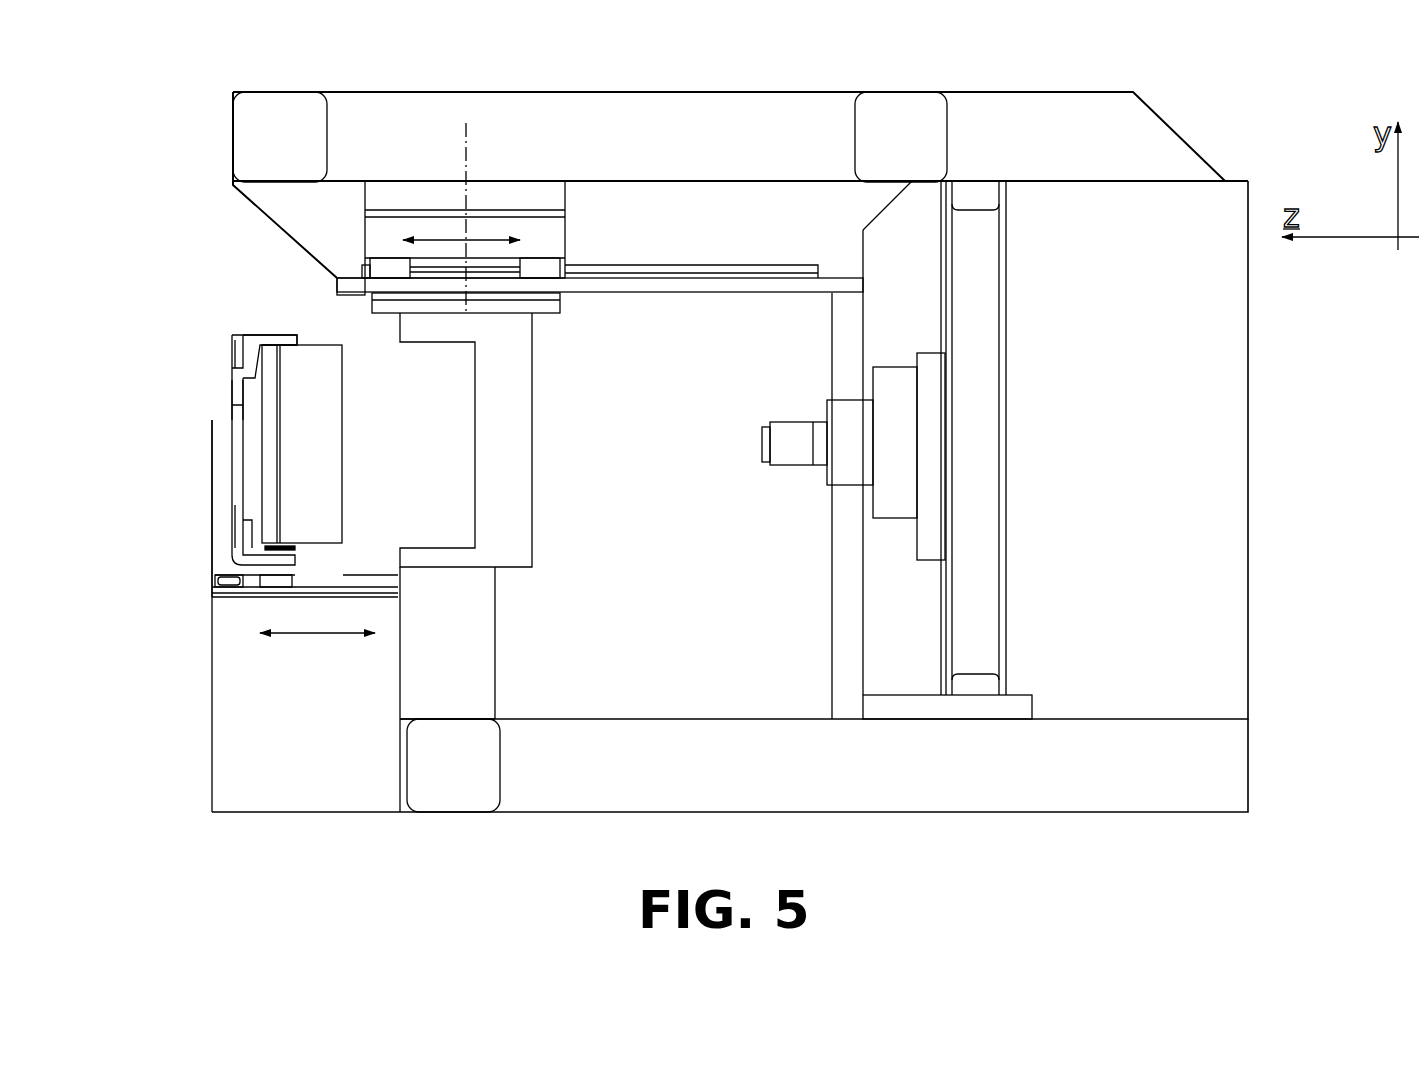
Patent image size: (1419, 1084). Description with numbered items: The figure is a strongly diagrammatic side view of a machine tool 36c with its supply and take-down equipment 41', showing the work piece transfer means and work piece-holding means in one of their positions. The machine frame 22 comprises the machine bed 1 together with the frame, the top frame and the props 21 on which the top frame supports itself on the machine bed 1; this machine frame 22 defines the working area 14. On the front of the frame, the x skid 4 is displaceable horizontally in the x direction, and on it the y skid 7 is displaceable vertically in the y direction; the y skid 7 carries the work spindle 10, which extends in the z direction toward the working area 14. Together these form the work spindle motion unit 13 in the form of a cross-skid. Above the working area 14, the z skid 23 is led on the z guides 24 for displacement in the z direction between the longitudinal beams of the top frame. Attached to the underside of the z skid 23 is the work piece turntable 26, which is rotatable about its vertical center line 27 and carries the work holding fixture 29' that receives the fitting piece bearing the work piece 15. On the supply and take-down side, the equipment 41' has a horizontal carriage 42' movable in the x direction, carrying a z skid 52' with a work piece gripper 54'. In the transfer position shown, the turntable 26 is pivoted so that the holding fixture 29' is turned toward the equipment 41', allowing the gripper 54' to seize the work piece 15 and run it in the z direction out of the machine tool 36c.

The machine bed 1 is at (726, 783).
The x skid 4 is at (993, 470).
The y skid 7 is at (940, 470).
The work spindle 10 is at (795, 450).
The work spindle motion unit 13 is at (1127, 470).
The working area 14 is at (731, 655).
The work piece 15 is at (323, 472).
The props 21 is at (463, 676).
The machine frame 22 is at (263, 220).
The z skid 23 is at (552, 237).
The z guides 24 is at (730, 277).
The work piece turntable 26 is at (543, 307).
The center line 27 is at (467, 157).
The work holding fixture 29' is at (516, 440).
The machine tool 36c is at (1252, 462).
The supply and take-down equipment 41' is at (182, 416).
The horizontal carriage 42' is at (255, 526).
The z skid 52' is at (179, 393).
The work piece gripper 54' is at (267, 324).